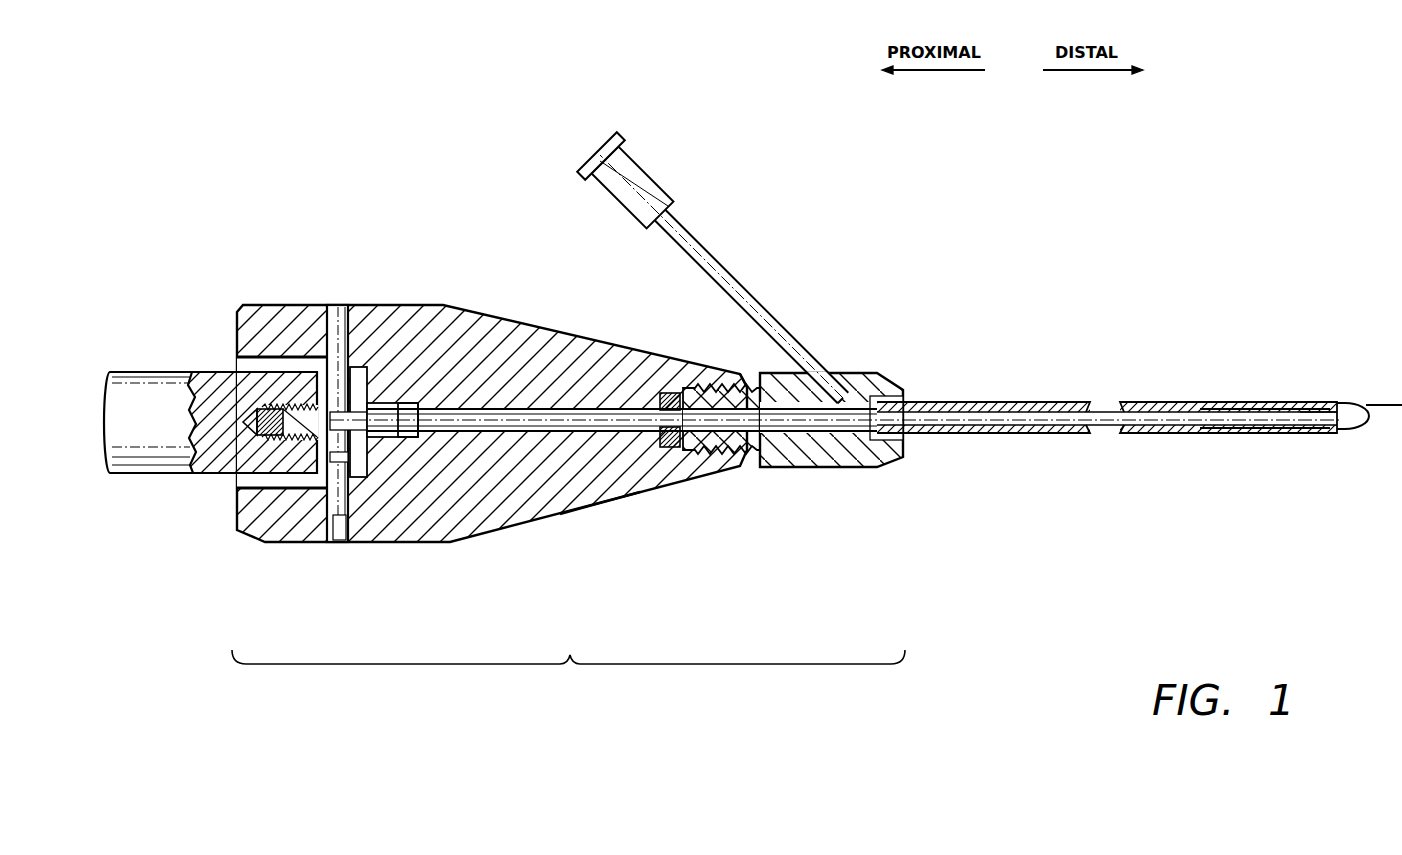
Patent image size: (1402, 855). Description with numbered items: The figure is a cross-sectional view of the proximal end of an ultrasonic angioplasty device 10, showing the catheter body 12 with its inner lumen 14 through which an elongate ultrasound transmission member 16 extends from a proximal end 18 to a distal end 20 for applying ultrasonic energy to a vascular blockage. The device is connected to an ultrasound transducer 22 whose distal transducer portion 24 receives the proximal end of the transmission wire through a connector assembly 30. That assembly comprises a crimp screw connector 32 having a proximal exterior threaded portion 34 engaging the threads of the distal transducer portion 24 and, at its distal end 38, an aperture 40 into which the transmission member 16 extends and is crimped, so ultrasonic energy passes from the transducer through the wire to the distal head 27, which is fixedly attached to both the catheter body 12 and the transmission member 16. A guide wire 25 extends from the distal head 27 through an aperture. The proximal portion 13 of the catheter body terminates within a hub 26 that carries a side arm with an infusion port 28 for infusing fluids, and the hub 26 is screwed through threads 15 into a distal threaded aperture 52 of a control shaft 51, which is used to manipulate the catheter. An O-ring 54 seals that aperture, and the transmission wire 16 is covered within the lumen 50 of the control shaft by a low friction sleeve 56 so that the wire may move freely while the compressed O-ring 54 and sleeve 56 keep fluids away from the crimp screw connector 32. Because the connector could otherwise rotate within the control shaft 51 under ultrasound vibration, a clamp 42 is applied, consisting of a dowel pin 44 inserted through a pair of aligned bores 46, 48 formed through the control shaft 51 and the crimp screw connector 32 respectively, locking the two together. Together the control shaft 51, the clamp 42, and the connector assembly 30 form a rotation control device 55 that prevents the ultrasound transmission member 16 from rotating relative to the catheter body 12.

The ultrasonic angioplasty device 10 is at (753, 418).
The elongated ultrasonic angioplasty catheter body 12 is at (1240, 435).
The proximal portion of the catheter body 13 is at (923, 435).
The inner lumen 14 is at (1003, 412).
The threads 15 is at (745, 385).
The ultrasound transmission member 16 is at (1317, 402).
The proximal end of the ultrasound transmission member 18 is at (433, 431).
The distal end of the ultrasound transmission member 20 is at (1350, 430).
The ultrasound transducer 22 is at (143, 357).
The distal transducer portion 24 is at (243, 403).
The guide wire 25 is at (1401, 402).
The hub 26 is at (847, 467).
The distal head 27 is at (1340, 412).
The side arm/infusion port 28 is at (710, 244).
The connector assembly 30 is at (355, 470).
The crimp screw connector 32 is at (365, 367).
The proximal exterior threaded portion 34 is at (257, 432).
The distal end of the crimp screw connector 38 is at (377, 403).
The aperture 40 is at (402, 403).
The clamp 42 is at (318, 556).
The pin 44 is at (337, 303).
The bore 46 is at (340, 513).
The bore 48 is at (335, 457).
The lumen 50 is at (520, 430).
The control shaft 51 is at (597, 505).
The distal threaded aperture 52 is at (745, 451).
The O-ring 54 is at (662, 393).
The rotation control device 55 is at (568, 677).
The low friction sleeve 56 is at (655, 447).